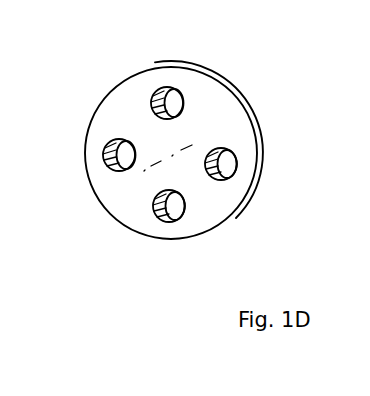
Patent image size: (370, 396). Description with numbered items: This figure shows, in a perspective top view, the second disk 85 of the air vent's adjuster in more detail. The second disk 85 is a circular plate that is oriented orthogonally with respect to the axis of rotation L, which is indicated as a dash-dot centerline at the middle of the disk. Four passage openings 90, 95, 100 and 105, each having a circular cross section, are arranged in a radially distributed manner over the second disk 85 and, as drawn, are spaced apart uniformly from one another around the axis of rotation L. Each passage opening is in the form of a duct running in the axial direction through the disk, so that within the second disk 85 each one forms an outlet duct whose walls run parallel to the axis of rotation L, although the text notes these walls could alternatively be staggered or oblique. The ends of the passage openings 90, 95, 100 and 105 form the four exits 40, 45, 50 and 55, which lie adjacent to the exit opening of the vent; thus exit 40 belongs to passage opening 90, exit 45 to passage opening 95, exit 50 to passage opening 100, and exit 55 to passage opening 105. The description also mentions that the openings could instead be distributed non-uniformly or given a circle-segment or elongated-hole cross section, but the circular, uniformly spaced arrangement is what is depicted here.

The exit 40 is at (152, 93).
The passage opening 90 is at (171, 101).
The exit 45 is at (104, 151).
The passage opening 95 is at (125, 158).
The exit 50 is at (208, 177).
The passage opening 100 is at (231, 166).
The exit 55 is at (154, 208).
The passage opening 105 is at (171, 211).
The second disk 85 is at (123, 209).
The axis of rotation L is at (160, 162).